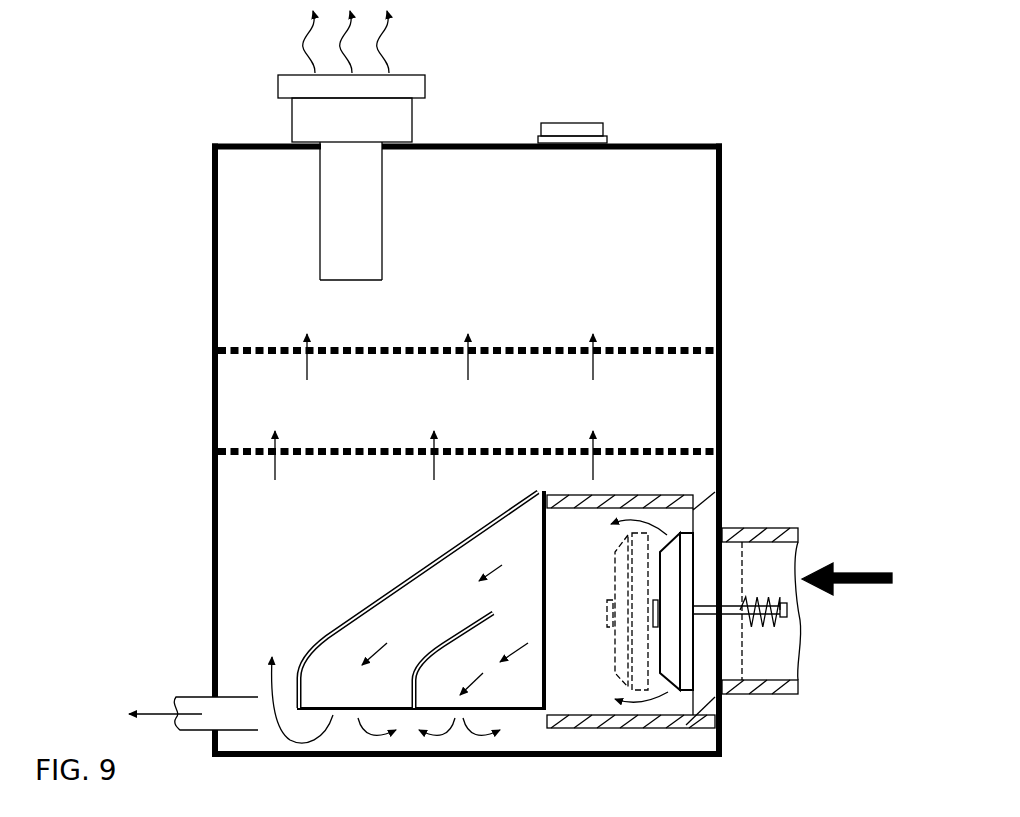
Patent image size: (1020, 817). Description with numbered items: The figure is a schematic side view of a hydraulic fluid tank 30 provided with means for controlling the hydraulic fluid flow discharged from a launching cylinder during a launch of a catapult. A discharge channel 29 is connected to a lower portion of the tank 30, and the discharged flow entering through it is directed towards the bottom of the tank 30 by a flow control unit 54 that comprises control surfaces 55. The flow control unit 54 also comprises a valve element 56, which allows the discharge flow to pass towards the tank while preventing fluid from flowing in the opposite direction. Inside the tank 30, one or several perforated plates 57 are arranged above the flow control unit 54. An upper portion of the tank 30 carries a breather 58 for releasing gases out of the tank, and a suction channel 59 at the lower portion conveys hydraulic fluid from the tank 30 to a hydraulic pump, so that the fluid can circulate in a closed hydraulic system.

The discharge channel 29 is at (780, 528).
The hydraulic fluid tank 30 is at (836, 179).
The flow control unit 54 is at (345, 567).
The control surfaces 55 is at (391, 601).
The valve element 56 is at (683, 668).
The perforated plates 57 is at (255, 346).
The breather 58 is at (240, 82).
The suction channel 59 is at (195, 700).